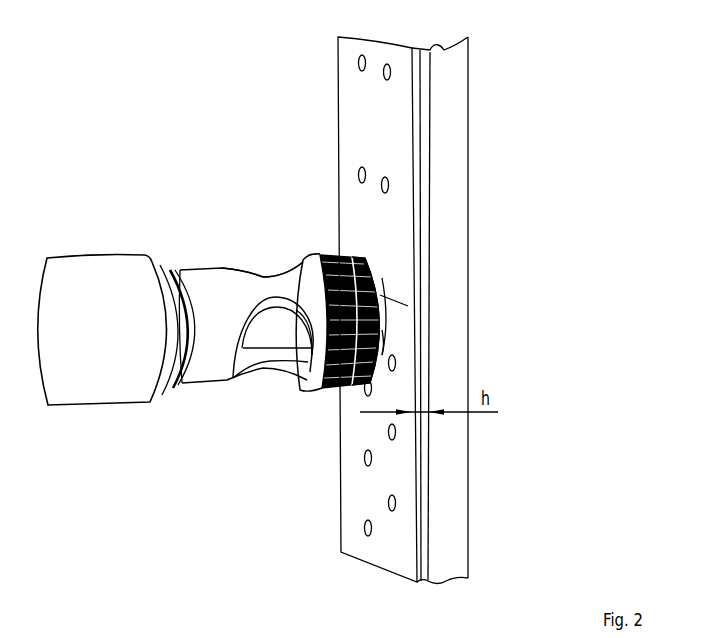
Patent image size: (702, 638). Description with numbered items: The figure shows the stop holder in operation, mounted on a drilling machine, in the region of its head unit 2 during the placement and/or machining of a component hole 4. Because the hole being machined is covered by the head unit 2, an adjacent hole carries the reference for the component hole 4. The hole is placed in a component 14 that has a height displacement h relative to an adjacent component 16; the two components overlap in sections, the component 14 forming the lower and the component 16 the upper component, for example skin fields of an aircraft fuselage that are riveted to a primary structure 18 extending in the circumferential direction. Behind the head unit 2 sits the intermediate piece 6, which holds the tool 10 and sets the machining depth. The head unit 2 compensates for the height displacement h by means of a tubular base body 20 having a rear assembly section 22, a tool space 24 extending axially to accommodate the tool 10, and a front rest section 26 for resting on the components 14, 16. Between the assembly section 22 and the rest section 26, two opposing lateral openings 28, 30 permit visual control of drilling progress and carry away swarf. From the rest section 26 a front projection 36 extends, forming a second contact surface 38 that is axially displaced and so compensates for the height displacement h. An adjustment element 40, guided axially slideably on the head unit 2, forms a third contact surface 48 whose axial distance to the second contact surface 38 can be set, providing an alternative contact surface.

The head unit 2 is at (201, 259).
The component hole 4 is at (397, 365).
The intermediate piece 6 is at (88, 246).
The tool 10 is at (278, 330).
The component 14 is at (425, 487).
The adjacent component 16 is at (413, 226).
The primary structure 18 is at (450, 125).
The tubular base body 20 is at (267, 283).
The rear assembly section 22 is at (197, 370).
The tool space 24 is at (305, 357).
The front rest section 26 is at (318, 385).
The lateral opening 28 is at (273, 368).
The lateral opening 30 is at (277, 273).
The front projection 36 is at (387, 338).
The second contact surface 38 is at (387, 313).
The adjustment element 40 is at (365, 273).
The third contact surface 48 is at (378, 271).